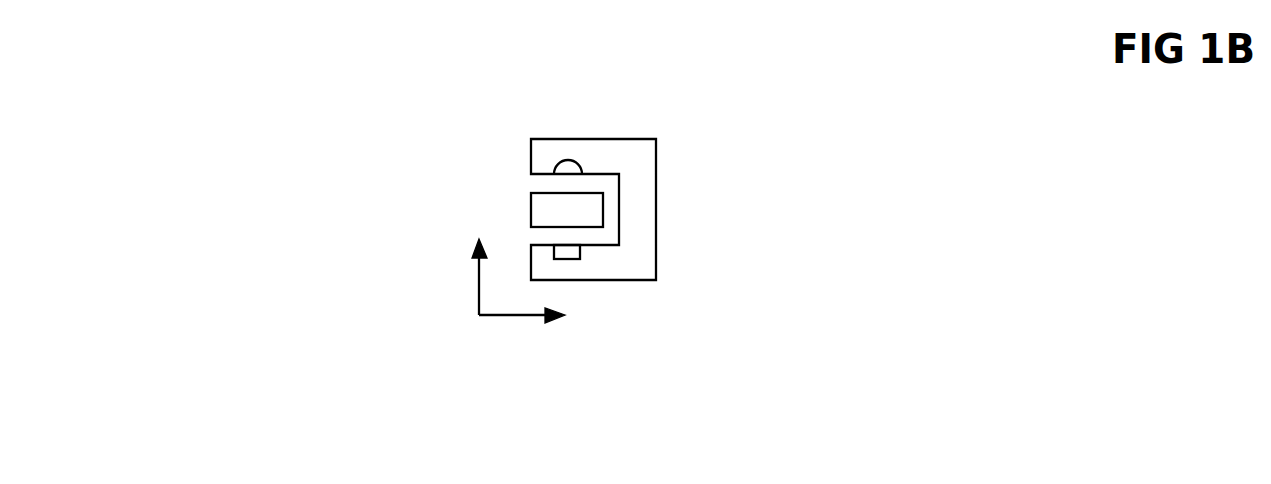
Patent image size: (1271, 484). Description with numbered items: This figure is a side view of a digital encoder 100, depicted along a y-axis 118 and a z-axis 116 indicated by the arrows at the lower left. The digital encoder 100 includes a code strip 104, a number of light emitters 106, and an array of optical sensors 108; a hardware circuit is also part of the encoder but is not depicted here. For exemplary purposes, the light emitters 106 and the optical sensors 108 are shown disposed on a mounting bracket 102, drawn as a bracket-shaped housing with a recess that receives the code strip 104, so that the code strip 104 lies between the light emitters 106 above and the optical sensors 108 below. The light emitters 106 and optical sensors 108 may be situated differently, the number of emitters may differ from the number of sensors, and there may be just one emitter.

The digital encoder 100 is at (441, 130).
The mounting bracket 102 is at (683, 101).
The code strip 104 is at (586, 221).
The light emitters 106 is at (561, 162).
The optical sensors 108 is at (569, 259).
The z-axis 116 is at (475, 262).
The y-axis 118 is at (520, 316).